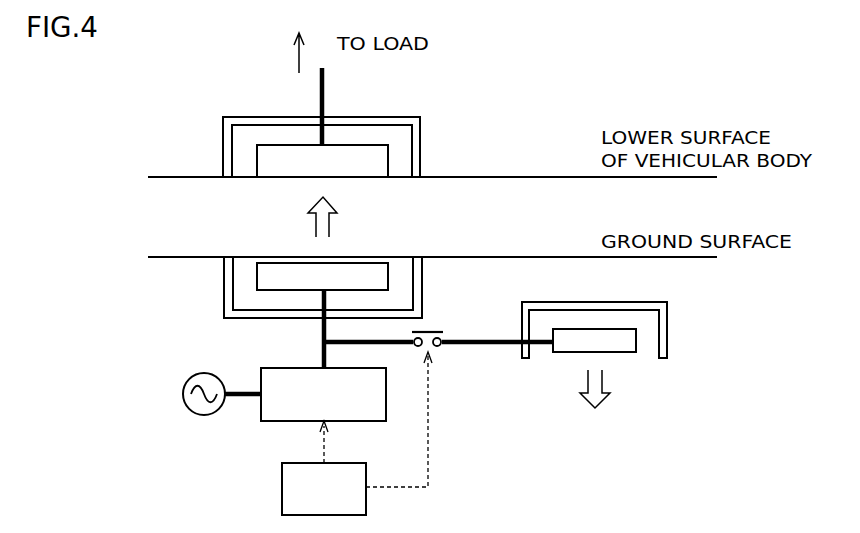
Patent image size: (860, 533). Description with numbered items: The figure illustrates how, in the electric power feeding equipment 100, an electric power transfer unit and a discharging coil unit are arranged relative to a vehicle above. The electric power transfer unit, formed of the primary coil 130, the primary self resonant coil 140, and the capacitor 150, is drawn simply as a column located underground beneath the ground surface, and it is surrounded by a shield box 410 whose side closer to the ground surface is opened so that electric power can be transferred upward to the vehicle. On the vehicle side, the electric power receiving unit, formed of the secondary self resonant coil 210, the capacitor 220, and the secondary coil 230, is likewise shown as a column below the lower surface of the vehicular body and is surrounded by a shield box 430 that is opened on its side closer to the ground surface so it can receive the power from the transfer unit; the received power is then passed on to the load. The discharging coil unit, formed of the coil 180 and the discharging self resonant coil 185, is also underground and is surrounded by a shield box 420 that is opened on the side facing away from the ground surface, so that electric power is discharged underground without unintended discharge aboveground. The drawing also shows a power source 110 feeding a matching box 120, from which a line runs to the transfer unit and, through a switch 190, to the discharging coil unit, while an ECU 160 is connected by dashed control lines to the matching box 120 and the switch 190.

The electric power feeding equipment 100 is at (517, 449).
The high-frequency power supply 110 is at (183, 394).
The matching box 120 is at (303, 368).
The primary coil 130 is at (240, 279).
The primary self resonant coil 140 is at (240, 279).
The capacitor 150 is at (257, 283).
The ECU 160 is at (303, 463).
The coil 180 is at (657, 340).
The discharging self resonant coil 185 is at (636, 342).
The switch 190 is at (426, 331).
The secondary self resonant coil 210 is at (239, 159).
The capacitor 220 is at (239, 159).
The secondary coil 230 is at (257, 163).
The shield box 410 is at (422, 272).
The shield box 420 is at (655, 302).
The shield box 430 is at (420, 153).